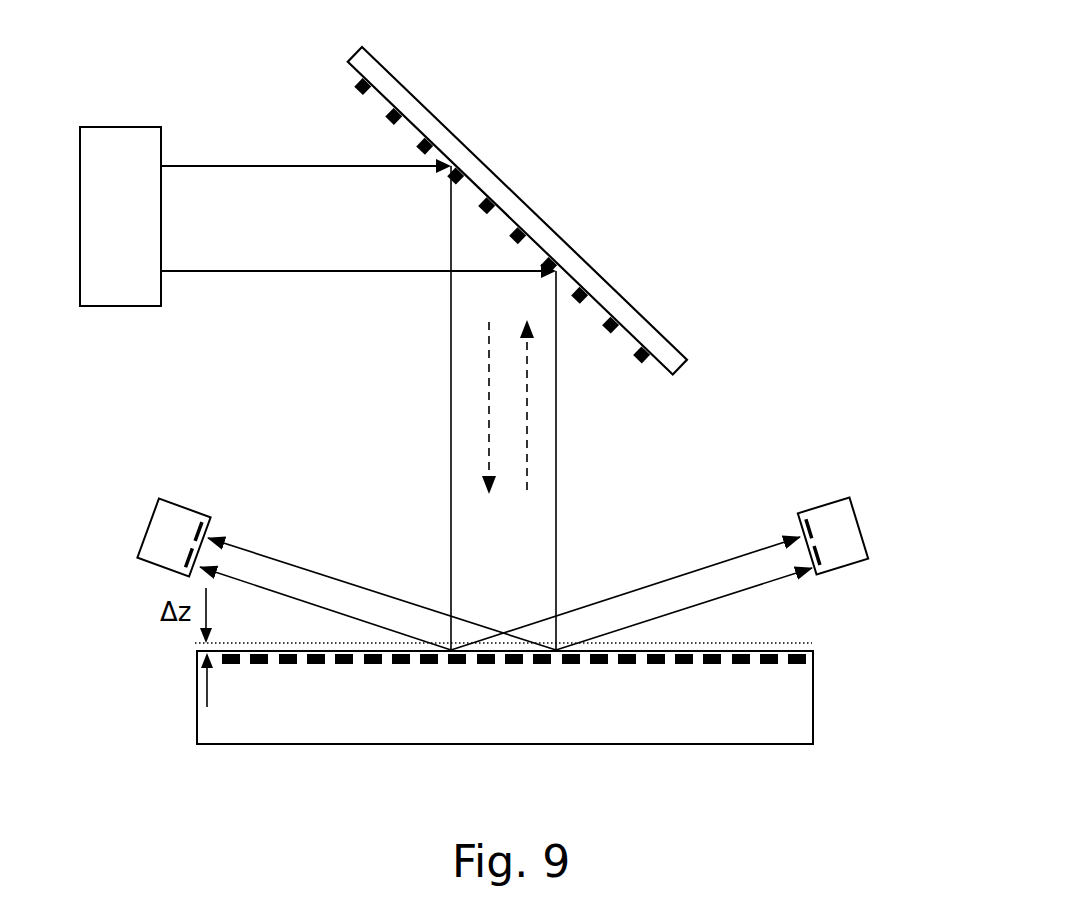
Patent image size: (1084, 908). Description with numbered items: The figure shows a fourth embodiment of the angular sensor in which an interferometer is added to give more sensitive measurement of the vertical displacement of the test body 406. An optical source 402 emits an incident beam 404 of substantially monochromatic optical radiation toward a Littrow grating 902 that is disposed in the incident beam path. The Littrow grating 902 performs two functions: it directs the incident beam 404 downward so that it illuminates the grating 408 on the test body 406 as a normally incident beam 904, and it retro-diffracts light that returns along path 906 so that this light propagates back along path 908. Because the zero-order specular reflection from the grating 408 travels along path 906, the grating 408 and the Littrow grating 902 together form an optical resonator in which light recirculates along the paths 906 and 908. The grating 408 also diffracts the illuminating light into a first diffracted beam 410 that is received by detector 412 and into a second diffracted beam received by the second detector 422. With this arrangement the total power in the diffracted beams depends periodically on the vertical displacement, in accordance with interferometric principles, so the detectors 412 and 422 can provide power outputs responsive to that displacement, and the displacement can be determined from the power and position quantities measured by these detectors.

The optical source 402 is at (102, 127).
The incident beam 404 is at (270, 273).
The Littrow grating 902 is at (553, 230).
The normally incident beam 904 is at (451, 490).
The path 906 is at (527, 397).
The path 908 is at (488, 397).
The test body 406 is at (813, 715).
The grating 408 is at (307, 698).
The first diffracted beam 410 is at (692, 568).
The detector 412 is at (853, 510).
The second detector 422 is at (152, 510).